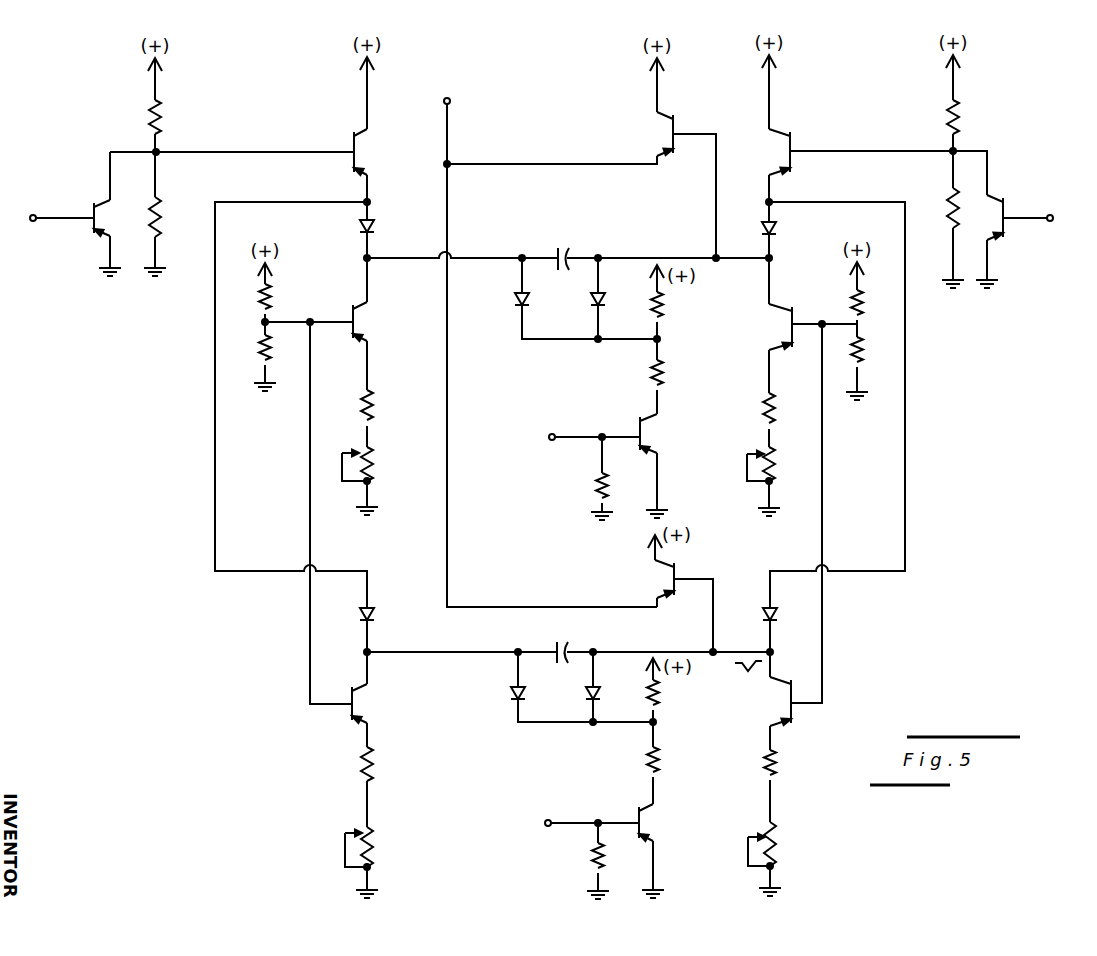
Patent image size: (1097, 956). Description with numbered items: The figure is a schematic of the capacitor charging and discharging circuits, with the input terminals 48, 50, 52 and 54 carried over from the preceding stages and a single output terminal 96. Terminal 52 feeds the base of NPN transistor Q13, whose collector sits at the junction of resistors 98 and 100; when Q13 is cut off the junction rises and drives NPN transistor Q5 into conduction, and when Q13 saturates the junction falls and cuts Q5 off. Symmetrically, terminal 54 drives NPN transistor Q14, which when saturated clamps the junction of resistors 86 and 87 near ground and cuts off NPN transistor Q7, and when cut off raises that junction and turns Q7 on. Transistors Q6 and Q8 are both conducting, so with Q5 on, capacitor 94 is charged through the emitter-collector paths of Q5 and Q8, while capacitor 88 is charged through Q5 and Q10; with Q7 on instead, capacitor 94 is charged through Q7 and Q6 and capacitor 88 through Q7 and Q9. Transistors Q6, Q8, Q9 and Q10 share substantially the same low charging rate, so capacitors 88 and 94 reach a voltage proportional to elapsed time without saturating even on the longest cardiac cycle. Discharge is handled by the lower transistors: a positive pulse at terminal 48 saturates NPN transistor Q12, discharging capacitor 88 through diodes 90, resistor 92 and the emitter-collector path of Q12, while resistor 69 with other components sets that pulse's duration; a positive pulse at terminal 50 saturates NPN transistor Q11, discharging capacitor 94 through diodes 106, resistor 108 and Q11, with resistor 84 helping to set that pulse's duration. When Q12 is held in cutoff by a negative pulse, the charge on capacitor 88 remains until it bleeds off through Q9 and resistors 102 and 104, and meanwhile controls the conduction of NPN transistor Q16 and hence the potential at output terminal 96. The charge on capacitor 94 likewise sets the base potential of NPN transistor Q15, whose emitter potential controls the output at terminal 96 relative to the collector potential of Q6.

The terminal 48 is at (549, 835).
The terminal 50 is at (566, 453).
The terminal 52 is at (58, 235).
The terminal 54 is at (1043, 222).
The resistor 69 is at (580, 855).
The resistor 84 is at (585, 488).
The resistor 86 is at (970, 117).
The resistor 87 is at (938, 208).
The capacitor 88 is at (558, 641).
The diodes 90 is at (635, 685).
The resistor 92 is at (669, 759).
The capacitor 94 is at (564, 247).
The output terminal 96 is at (465, 102).
The resistor 98 is at (173, 117).
The resistor 100 is at (179, 217).
The resistor 102 is at (388, 764).
The resistor 104 is at (380, 847).
The diodes 106 is at (637, 308).
The resistor 108 is at (679, 374).
The NPN transistor Q5 is at (372, 152).
The transistor Q6 is at (372, 321).
The NPN transistor Q7 is at (768, 152).
The transistor Q8 is at (769, 327).
The transistor Q9 is at (373, 703).
The transistor Q10 is at (765, 701).
The NPN transistor Q11 is at (667, 433).
The NPN transistor Q12 is at (664, 822).
The NPN transistor Q13 is at (116, 218).
The NPN transistor Q14 is at (982, 217).
The NPN transistor Q15 is at (647, 134).
The NPN transistor Q16 is at (648, 579).